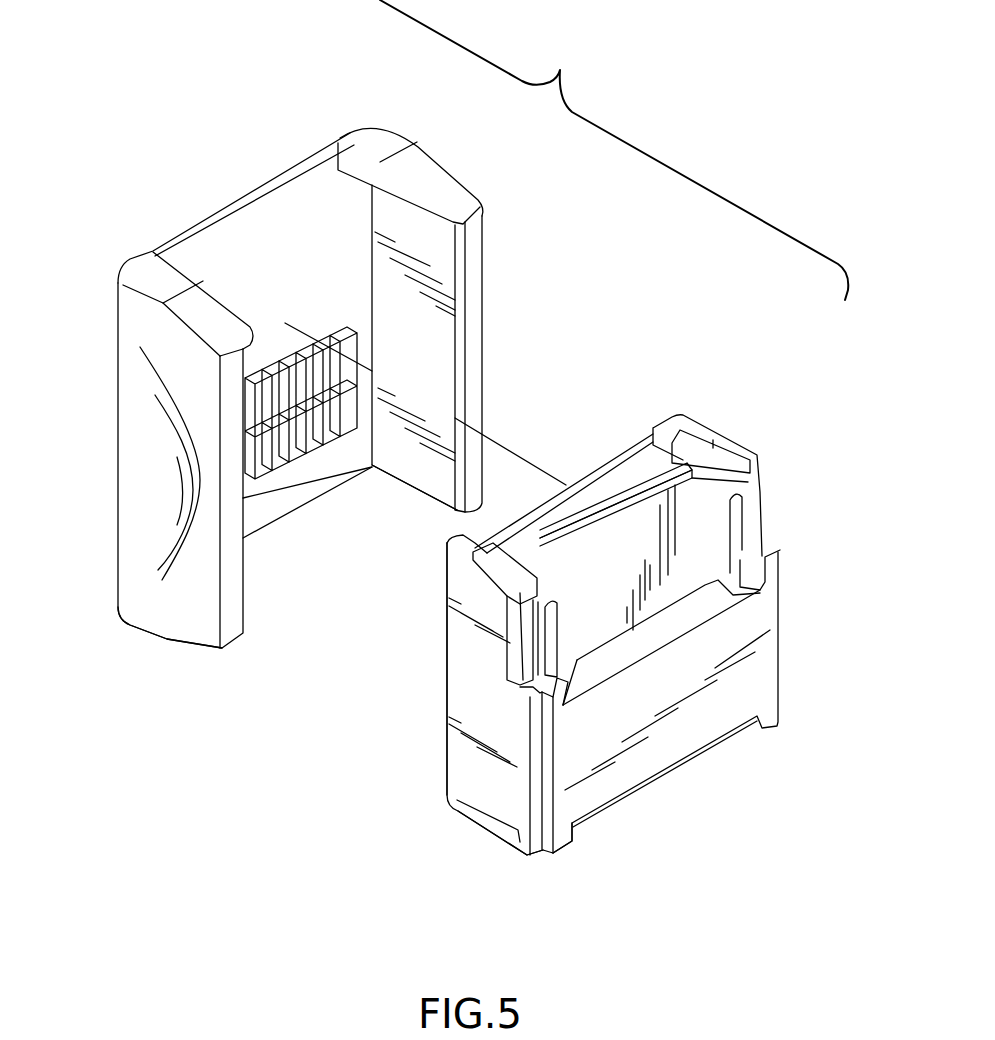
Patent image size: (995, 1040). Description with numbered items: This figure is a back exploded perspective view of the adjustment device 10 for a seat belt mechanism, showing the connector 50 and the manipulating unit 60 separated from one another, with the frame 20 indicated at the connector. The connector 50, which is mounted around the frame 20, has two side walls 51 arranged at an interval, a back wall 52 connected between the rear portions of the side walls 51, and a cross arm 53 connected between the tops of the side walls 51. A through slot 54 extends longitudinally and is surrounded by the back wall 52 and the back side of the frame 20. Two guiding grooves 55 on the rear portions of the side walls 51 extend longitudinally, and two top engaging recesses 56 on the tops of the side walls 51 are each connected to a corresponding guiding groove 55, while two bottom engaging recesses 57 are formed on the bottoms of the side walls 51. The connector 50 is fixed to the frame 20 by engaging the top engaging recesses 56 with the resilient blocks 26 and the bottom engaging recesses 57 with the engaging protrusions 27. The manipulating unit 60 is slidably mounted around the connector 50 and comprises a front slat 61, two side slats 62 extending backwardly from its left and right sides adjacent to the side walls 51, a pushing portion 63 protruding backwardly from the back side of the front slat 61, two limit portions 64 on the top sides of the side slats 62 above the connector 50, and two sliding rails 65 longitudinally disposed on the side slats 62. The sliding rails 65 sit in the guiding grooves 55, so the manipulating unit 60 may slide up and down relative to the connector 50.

The adjustment device 10 is at (108, 405).
The frame 20 is at (600, 535).
The resilient blocks 26 is at (520, 650).
The engaging protrusions 27 is at (503, 837).
The connector 50 is at (784, 626).
The side walls 51 is at (470, 752).
The back wall 52 is at (702, 732).
The cross arm 53 is at (644, 466).
The through slot 54 is at (672, 630).
The guiding grooves 55 is at (780, 563).
The top engaging recesses 56 is at (513, 628).
The bottom engaging recesses 57 is at (480, 808).
The manipulating unit 60 is at (168, 218).
The front slat 61 is at (266, 210).
The side slats 62 is at (138, 532).
The pushing portion 63 is at (295, 398).
The limit portions 64 is at (230, 303).
The sliding rails 65 is at (235, 607).